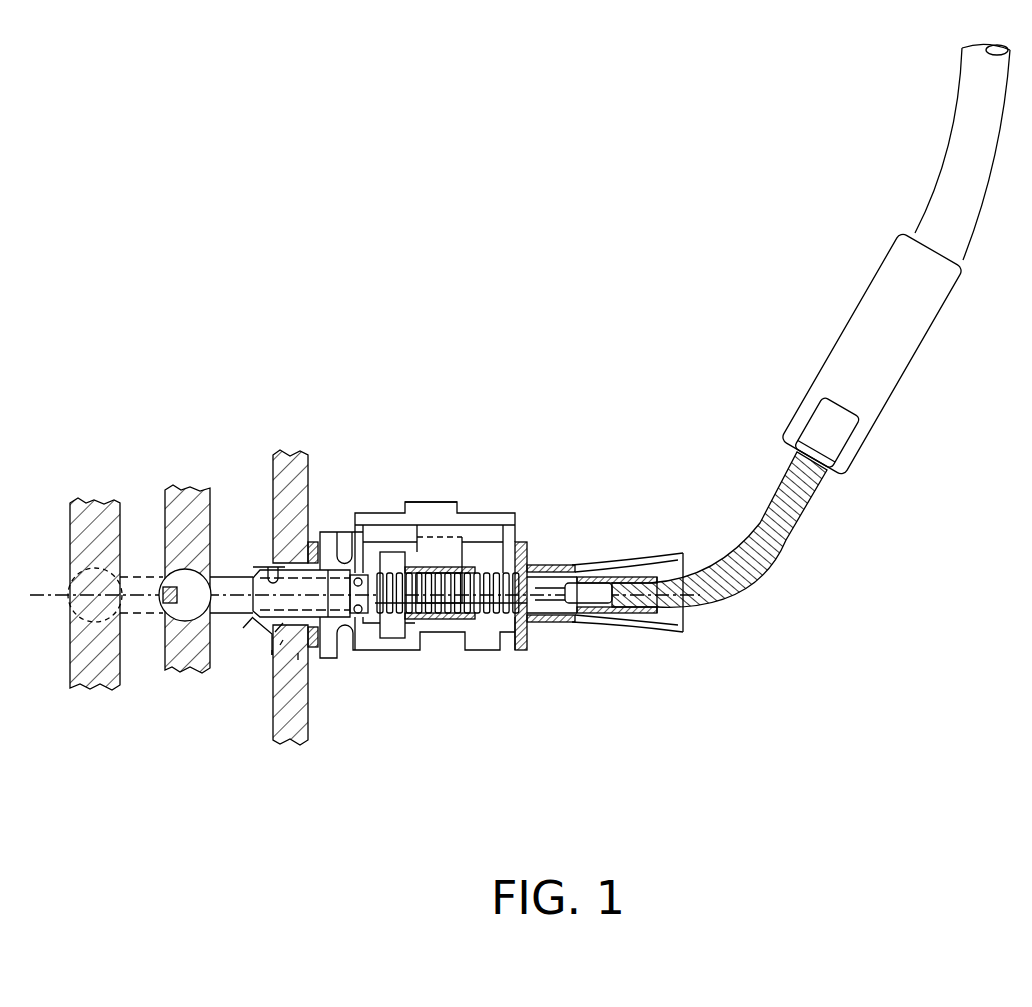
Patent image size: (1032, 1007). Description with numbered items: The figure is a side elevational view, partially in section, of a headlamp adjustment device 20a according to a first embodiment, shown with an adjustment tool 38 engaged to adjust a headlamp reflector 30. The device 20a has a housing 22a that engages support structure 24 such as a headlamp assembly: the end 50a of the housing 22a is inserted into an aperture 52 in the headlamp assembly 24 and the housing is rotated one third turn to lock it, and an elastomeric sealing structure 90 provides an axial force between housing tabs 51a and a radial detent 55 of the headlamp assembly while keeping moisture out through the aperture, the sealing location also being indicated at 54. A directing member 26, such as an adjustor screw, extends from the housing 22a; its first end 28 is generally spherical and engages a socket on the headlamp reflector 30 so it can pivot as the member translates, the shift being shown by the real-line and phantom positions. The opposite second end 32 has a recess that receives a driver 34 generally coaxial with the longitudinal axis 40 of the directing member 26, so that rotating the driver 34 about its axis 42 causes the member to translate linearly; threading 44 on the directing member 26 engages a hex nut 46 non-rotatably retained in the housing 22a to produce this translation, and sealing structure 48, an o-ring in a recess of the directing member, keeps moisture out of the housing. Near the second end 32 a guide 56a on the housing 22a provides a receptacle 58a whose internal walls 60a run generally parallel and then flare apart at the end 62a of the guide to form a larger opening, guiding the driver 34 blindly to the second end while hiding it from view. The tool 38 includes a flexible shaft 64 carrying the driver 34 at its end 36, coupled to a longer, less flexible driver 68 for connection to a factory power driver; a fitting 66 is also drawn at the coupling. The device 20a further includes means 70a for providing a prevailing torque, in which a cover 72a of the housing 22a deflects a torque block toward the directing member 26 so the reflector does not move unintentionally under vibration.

The device 20a is at (477, 602).
The housing 22a is at (462, 575).
The support structure 24 is at (297, 688).
The directing member 26 is at (233, 607).
The first end 28 is at (193, 585).
The headlamp reflector 30 is at (182, 507).
The second end 32 is at (533, 625).
The driver 34 is at (560, 586).
The end of tool 36 is at (493, 617).
The tool 38 is at (811, 329).
The longitudinal axis 40 is at (323, 543).
The axis 42 is at (600, 593).
The threading 44 is at (437, 645).
The hex nut 46 is at (393, 627).
The sealing structure 48 is at (357, 612).
The end of housing 50a is at (243, 628).
The housing tabs 51a is at (283, 640).
The aperture 52 is at (268, 570).
The aperture location 54 is at (298, 653).
The radial detent 55 is at (272, 650).
The guide 56a is at (638, 634).
The receptacle 58a is at (665, 570).
The internal walls 60a is at (638, 568).
The end of guide 62a is at (683, 627).
The flexible shaft 64 is at (745, 577).
The conduit sleeve 66 is at (875, 310).
The flexible driver 68 is at (960, 167).
The means for providing a prevailing torque 70a is at (447, 497).
The cover 72a is at (403, 520).
The elastomeric sealing structure 90 is at (315, 540).